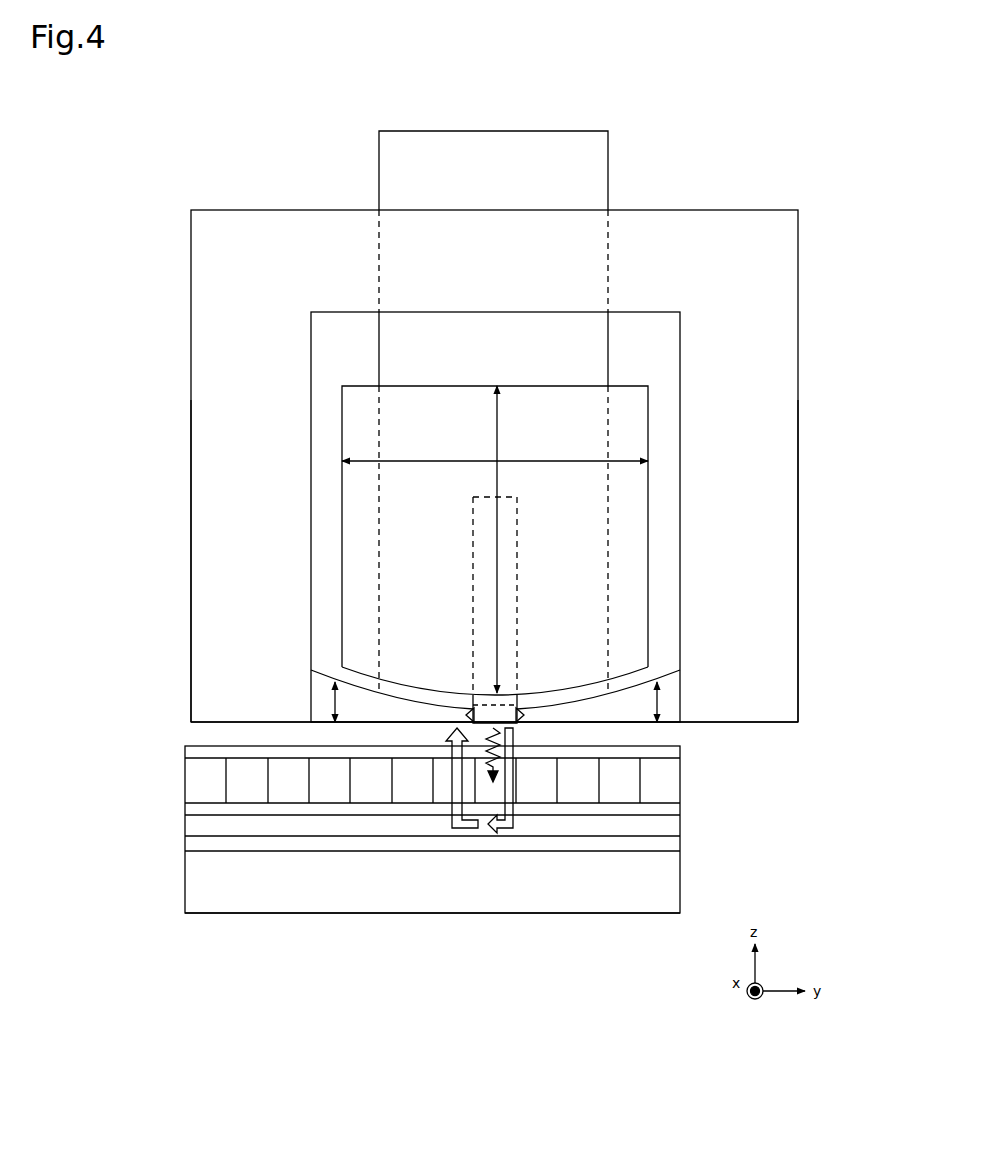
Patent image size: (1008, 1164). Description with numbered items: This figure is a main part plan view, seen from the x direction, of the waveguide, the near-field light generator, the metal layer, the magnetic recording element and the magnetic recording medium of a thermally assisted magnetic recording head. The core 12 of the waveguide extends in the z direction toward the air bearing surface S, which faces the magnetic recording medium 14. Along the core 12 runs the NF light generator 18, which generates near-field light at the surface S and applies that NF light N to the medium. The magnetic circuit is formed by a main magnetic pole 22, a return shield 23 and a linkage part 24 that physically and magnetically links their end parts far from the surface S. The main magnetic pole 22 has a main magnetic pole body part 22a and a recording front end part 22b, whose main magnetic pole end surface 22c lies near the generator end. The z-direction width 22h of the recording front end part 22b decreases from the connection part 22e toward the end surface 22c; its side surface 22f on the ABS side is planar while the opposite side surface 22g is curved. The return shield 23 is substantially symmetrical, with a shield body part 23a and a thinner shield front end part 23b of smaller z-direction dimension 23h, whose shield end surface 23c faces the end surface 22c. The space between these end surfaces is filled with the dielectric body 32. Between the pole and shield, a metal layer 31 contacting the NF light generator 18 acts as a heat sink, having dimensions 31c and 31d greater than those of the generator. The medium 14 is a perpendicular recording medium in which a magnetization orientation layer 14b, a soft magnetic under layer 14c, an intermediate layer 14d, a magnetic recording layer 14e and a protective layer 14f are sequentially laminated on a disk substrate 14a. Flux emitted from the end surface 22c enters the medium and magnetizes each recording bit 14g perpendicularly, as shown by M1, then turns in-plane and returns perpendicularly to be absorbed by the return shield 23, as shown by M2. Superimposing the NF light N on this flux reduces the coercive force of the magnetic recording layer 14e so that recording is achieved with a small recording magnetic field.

The core 12 is at (402, 348).
The magnetic recording medium 14 is at (495, 848).
The disk substrate 14a is at (680, 863).
The magnetization orientation layer 14b is at (680, 845).
The soft magnetic under layer 14c is at (680, 826).
The intermediate layer 14d is at (680, 808).
The magnetic recording layer 14e is at (680, 780).
The protective layer 14f is at (680, 750).
The recording bit 14g is at (490, 795).
The NF light generator 18 is at (478, 535).
The main magnetic pole 22 is at (701, 572).
The main magnetic pole body part 22a is at (748, 595).
The recording front end part 22b is at (672, 683).
The main magnetic pole end surface 22c is at (517, 723).
The connection part 22e is at (680, 705).
The side surface 22f is at (612, 722).
The side surface 22g is at (638, 682).
The z-direction width 22h is at (643, 702).
The return shield 23 is at (286, 572).
The shield body part 23a is at (215, 576).
The shield front end part 23b is at (317, 687).
The shield end surface 23c is at (455, 727).
The dimension 23h is at (351, 702).
The linkage part 24 is at (334, 226).
The metal layer 31 is at (640, 500).
The dimension 31c is at (495, 450).
The dimension 31d is at (488, 539).
The dielectric body 32 is at (500, 708).
The NF light N is at (487, 755).
The magnetic flux M1 is at (518, 781).
The magnetic flux M2 is at (446, 781).
The air bearing surface S is at (812, 722).